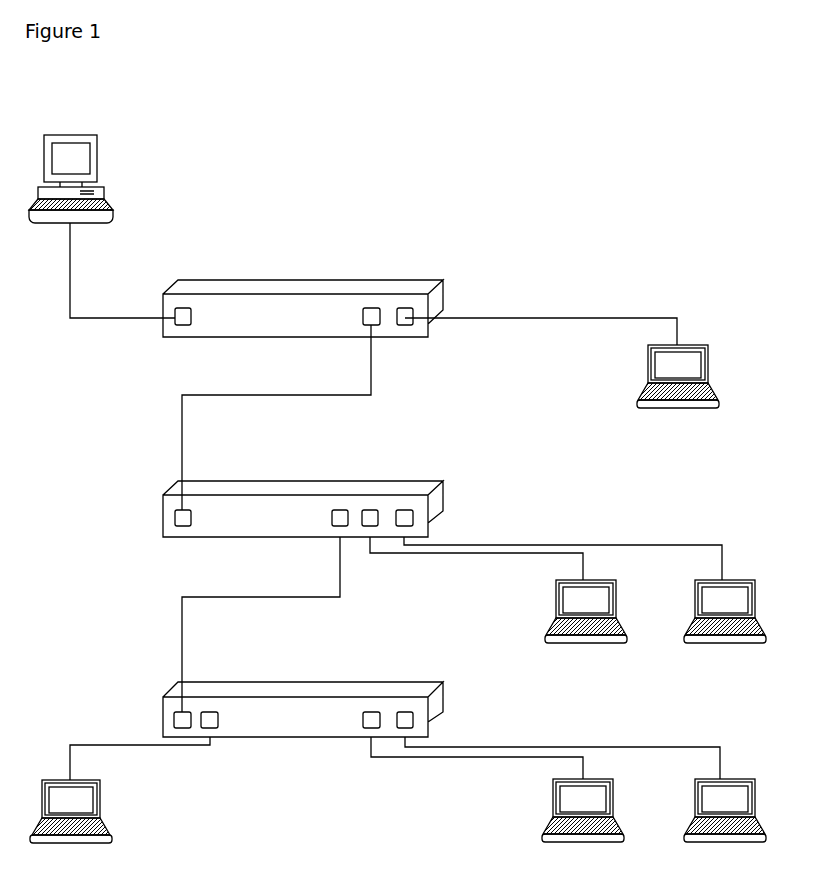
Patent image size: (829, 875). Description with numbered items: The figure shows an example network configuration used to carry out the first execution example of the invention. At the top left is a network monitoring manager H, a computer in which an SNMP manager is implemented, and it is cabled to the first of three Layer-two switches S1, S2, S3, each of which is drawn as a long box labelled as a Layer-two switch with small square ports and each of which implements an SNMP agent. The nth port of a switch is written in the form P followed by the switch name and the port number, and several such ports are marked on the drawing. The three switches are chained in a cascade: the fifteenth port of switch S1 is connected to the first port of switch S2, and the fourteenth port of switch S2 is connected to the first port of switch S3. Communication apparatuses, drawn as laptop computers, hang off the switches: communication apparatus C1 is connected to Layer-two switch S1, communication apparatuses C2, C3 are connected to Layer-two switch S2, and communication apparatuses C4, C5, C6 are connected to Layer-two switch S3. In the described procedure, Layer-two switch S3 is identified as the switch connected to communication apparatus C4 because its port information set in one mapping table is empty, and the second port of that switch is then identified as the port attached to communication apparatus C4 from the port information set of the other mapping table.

The network monitoring manager H is at (98, 163).
The Layer-2 switch S1 is at (223, 281).
The Layer-2 switch S2 is at (223, 481).
The Layer-2 switch S3 is at (222, 682).
The communication apparatus C1 is at (707, 356).
The communication apparatus C2 is at (616, 592).
The communication apparatus C3 is at (755, 592).
The communication apparatus C4 is at (101, 791).
The communication apparatus C5 is at (613, 792).
The communication apparatus C6 is at (755, 792).